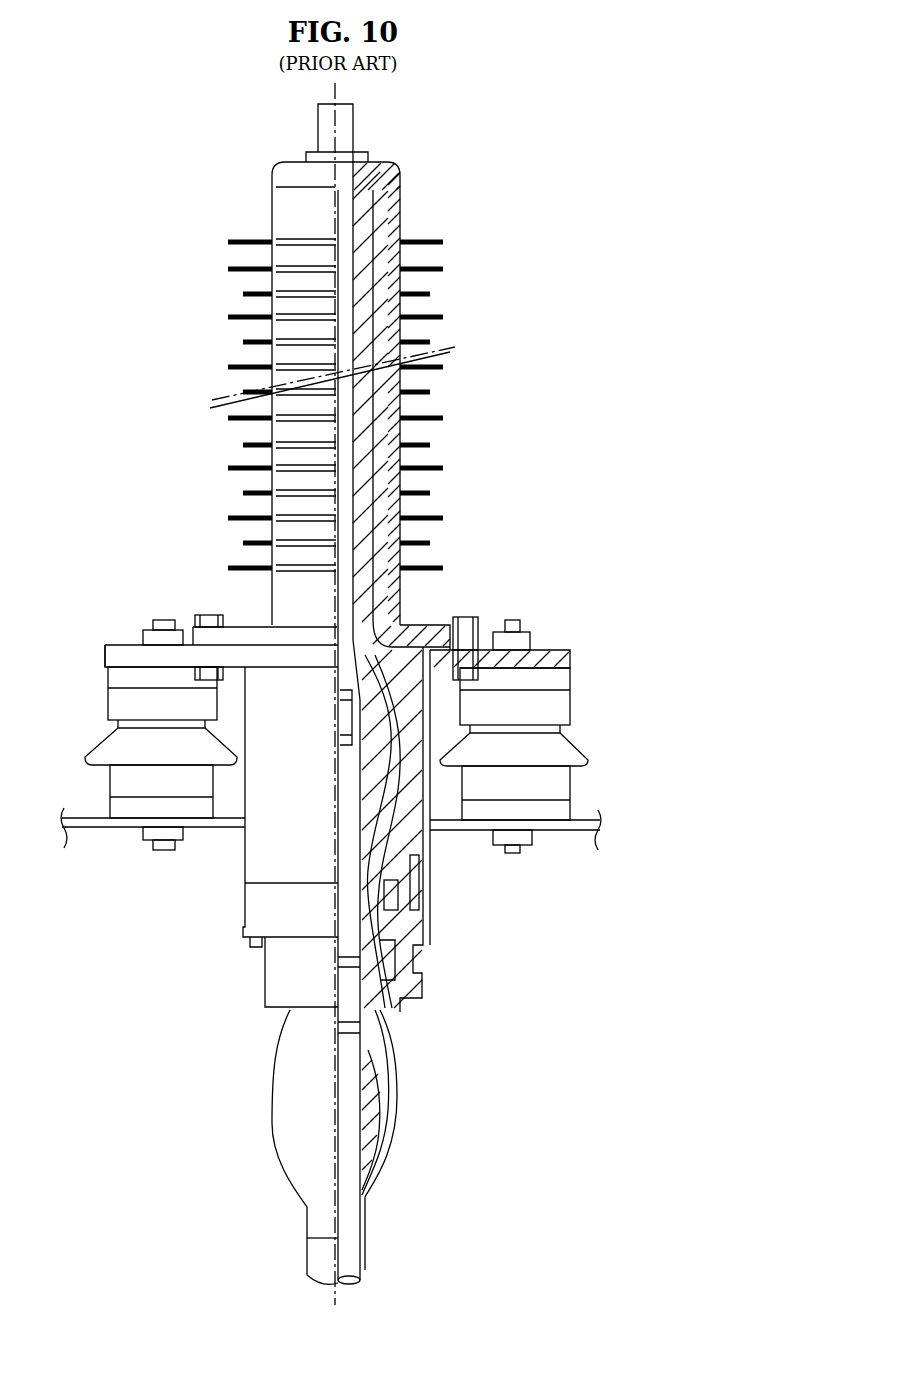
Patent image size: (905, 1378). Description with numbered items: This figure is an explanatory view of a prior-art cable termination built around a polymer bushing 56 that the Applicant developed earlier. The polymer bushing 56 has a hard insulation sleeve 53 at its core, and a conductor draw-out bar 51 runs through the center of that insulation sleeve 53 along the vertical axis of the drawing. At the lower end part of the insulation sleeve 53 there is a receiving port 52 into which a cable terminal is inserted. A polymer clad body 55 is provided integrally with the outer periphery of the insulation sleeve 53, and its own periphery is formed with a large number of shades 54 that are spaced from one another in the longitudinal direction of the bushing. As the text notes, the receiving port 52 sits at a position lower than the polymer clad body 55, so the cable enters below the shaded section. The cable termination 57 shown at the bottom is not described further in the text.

The conductor draw-out bar 51 is at (347, 209).
The receiving port 52 is at (362, 847).
The insulation sleeve 53 is at (377, 308).
The shades 54 is at (444, 452).
The polymer clad body 55 is at (231, 448).
The polymer bushing 56 is at (205, 863).
The cable termination 57 is at (266, 1026).